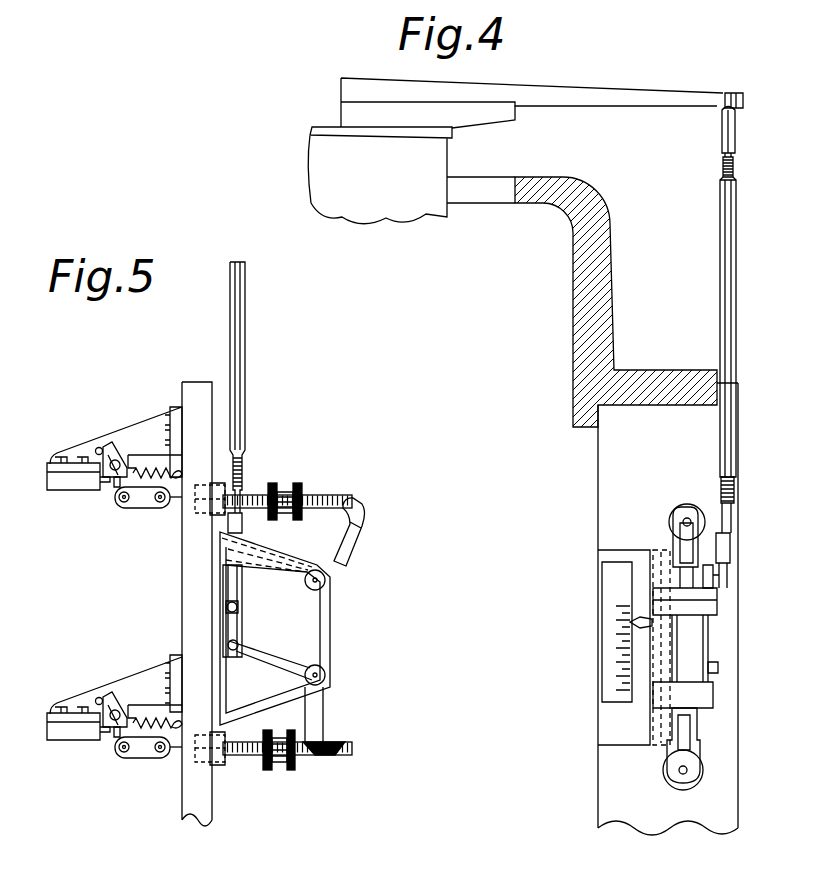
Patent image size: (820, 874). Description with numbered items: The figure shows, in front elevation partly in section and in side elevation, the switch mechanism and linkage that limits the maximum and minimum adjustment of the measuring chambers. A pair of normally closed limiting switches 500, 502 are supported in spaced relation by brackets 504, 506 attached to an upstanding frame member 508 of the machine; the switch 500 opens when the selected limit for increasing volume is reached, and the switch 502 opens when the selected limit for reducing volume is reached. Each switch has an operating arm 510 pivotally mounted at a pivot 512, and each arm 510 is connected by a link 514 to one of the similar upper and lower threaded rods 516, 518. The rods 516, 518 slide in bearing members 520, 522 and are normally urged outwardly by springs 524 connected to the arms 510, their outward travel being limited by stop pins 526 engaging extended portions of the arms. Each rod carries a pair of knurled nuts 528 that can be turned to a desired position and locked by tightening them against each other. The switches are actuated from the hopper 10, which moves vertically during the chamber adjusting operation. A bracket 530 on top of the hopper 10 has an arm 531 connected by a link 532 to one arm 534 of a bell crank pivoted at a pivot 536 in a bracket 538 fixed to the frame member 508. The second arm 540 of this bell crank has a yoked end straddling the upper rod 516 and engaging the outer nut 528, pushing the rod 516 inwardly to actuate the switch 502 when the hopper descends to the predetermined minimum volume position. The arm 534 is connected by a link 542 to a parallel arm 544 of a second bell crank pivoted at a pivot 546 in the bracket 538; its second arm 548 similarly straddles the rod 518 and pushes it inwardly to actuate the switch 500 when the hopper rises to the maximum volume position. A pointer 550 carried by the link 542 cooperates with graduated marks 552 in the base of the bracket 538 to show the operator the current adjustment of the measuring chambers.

In FIG. 4, the hopper 10 is at (322, 126).
In FIG. 5, the limiting switch 500 is at (70, 738).
In FIG. 5, the limiting switch 502 is at (72, 488).
In FIG. 5, the bracket 504 is at (127, 675).
In FIG. 5, the bracket 506 is at (143, 420).
In FIG. 4, the frame member 508 is at (598, 470).
In FIG. 5, the frame member 508 is at (182, 578).
In FIG. 5, the operating arm 510 is at (117, 488).
In FIG. 5, the pivot 512 is at (113, 470).
In FIG. 5, the link 514 is at (142, 509).
In FIG. 4, the upper threaded rod 516 is at (686, 518).
In FIG. 5, the upper threaded rod 516 is at (352, 500).
In FIG. 4, the lower threaded rod 518 is at (684, 776).
In FIG. 5, the lower threaded rod 518 is at (352, 748).
In FIG. 5, the bearing member 520 is at (212, 517).
In FIG. 5, the bearing member 522 is at (214, 766).
In FIG. 5, the spring 524 is at (150, 470).
In FIG. 5, the stop pin 526 is at (96, 450).
In FIG. 4, the knurled nut 528 is at (691, 505).
In FIG. 5, the knurled nut 528 is at (298, 484).
In FIG. 4, the bracket 530 is at (476, 118).
In FIG. 4, the arm 531 is at (622, 104).
In FIG. 4, the link 532 is at (720, 275).
In FIG. 5, the link 532 is at (248, 350).
In FIG. 4, the bell crank arm 534 is at (713, 571).
In FIG. 5, the bell crank arm 534 is at (270, 532).
In FIG. 5, the pivot 536 is at (326, 580).
In FIG. 4, the bracket 538 is at (649, 551).
In FIG. 5, the bracket 538 is at (331, 625).
In FIG. 4, the second bell crank arm 540 is at (668, 520).
In FIG. 5, the second bell crank arm 540 is at (362, 557).
In FIG. 4, the link 542 is at (709, 644).
In FIG. 5, the link 542 is at (238, 591).
In FIG. 4, the parallel arm 544 is at (718, 668).
In FIG. 5, the parallel arm 544 is at (253, 653).
In FIG. 5, the pivot 546 is at (326, 675).
In FIG. 4, the second arm of lower bell crank 548 is at (668, 752).
In FIG. 5, the second arm of lower bell crank 548 is at (322, 700).
In FIG. 4, the pointer 550 is at (630, 622).
In FIG. 5, the pointer 550 is at (240, 609).
In FIG. 4, the graduated marks 552 is at (618, 690).